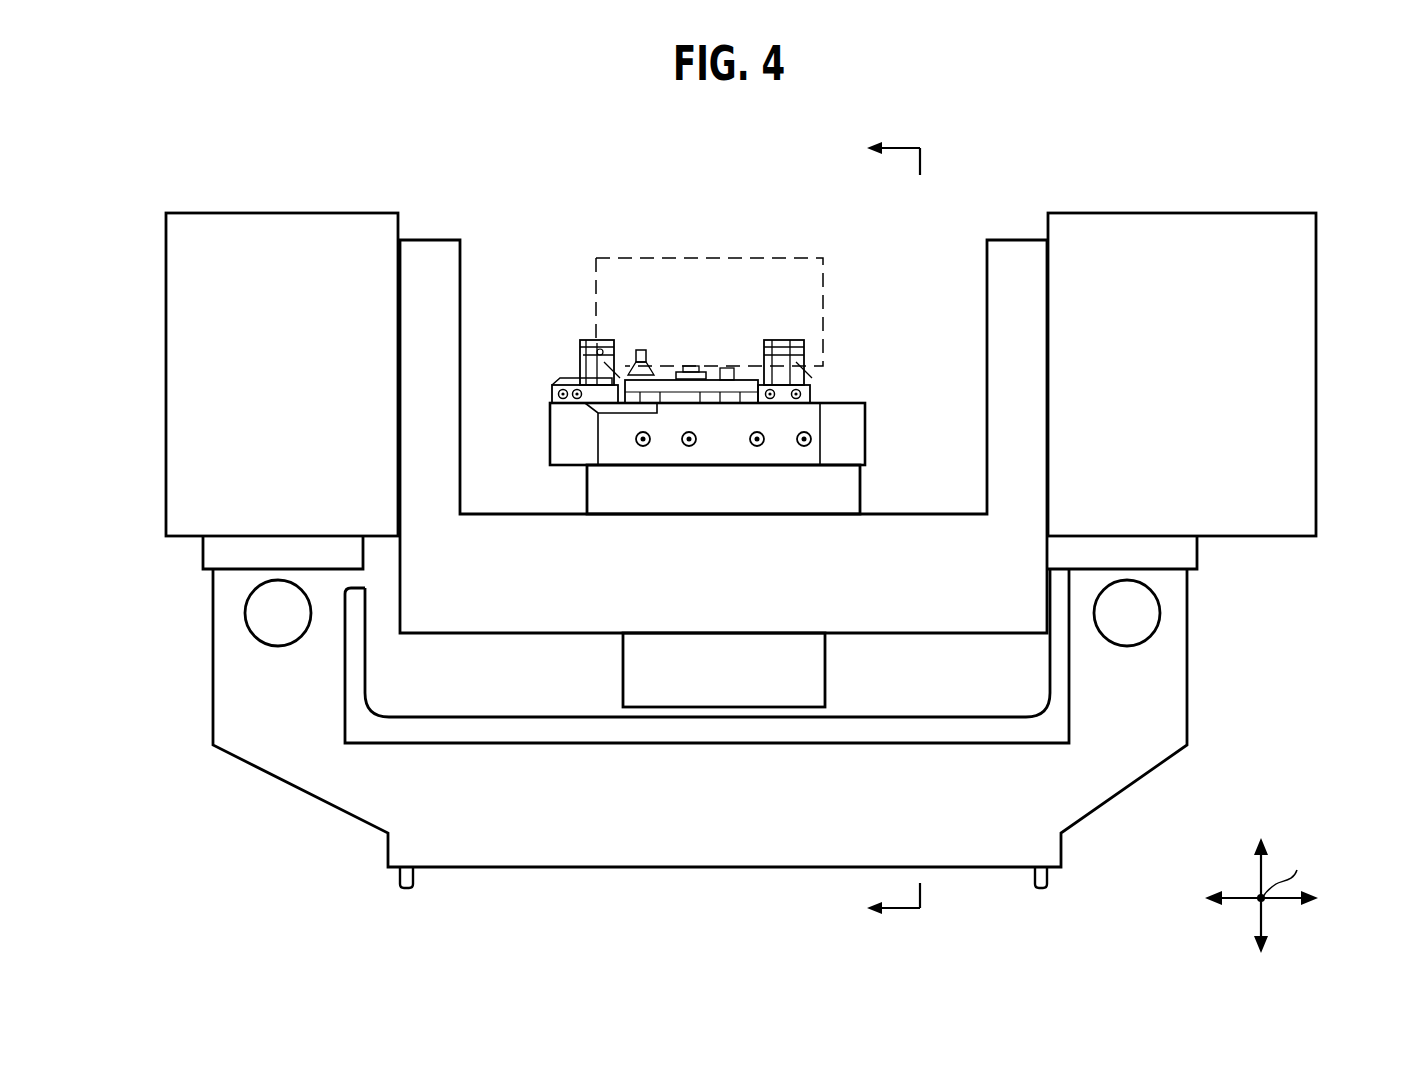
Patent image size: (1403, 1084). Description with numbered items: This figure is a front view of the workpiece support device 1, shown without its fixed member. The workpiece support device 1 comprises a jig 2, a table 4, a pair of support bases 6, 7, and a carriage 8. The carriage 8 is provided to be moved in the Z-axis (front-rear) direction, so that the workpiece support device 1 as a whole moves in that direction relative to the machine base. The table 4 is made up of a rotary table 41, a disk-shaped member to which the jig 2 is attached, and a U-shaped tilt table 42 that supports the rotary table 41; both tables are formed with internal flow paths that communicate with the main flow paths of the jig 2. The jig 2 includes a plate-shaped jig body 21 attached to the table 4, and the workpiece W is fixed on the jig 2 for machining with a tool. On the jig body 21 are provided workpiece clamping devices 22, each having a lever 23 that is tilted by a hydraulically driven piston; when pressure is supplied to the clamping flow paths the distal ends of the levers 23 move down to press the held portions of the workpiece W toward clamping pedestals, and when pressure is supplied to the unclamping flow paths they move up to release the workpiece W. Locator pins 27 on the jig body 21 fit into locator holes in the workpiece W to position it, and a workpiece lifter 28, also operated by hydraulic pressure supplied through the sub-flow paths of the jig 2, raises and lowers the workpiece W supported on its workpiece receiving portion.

The workpiece support device 1 is at (1025, 157).
The jig 2 is at (872, 398).
The table 4 is at (565, 920).
The support base 6 is at (191, 212).
The support base 7 is at (1247, 212).
The carriage 8 is at (660, 848).
The jig body 21 is at (868, 420).
The workpiece clamping device 22 is at (566, 380).
The lever 23 is at (607, 345).
The locator pin 27 is at (640, 360).
The workpiece lifter 28 is at (695, 368).
The rotary table 41 is at (631, 493).
The tilt table 42 is at (481, 570).
The workpiece W is at (644, 258).